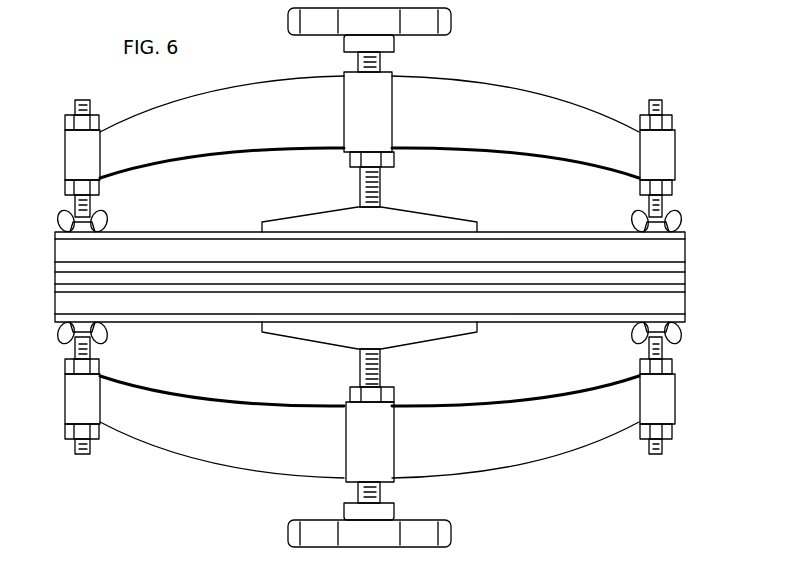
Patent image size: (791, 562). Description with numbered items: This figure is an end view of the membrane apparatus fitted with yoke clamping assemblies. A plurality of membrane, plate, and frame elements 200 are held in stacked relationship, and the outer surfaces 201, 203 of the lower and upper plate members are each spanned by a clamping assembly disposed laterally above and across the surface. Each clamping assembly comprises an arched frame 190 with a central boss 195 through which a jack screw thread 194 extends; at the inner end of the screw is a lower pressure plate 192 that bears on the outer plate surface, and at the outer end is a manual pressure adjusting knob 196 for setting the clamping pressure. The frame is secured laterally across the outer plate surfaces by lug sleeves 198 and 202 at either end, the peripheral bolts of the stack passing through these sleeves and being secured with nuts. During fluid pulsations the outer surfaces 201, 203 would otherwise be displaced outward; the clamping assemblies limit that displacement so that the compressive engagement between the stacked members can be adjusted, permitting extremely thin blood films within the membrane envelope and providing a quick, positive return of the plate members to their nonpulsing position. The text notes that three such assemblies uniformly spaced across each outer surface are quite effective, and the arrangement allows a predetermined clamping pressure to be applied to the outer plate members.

The arched frame 190 is at (471, 131).
The lower pressure plate 192 is at (458, 222).
The jack screw thread 194 is at (380, 182).
The central boss 195 is at (344, 115).
The manual pressure adjusting knob 196 is at (451, 24).
The lug sleeve 198 is at (675, 161).
The membrane, plate, and frame elements 200 is at (407, 278).
The outer surface of lower plate member 201 is at (200, 322).
The lug sleeve 202 is at (65, 160).
The outer surface of upper plate member 203 is at (202, 232).